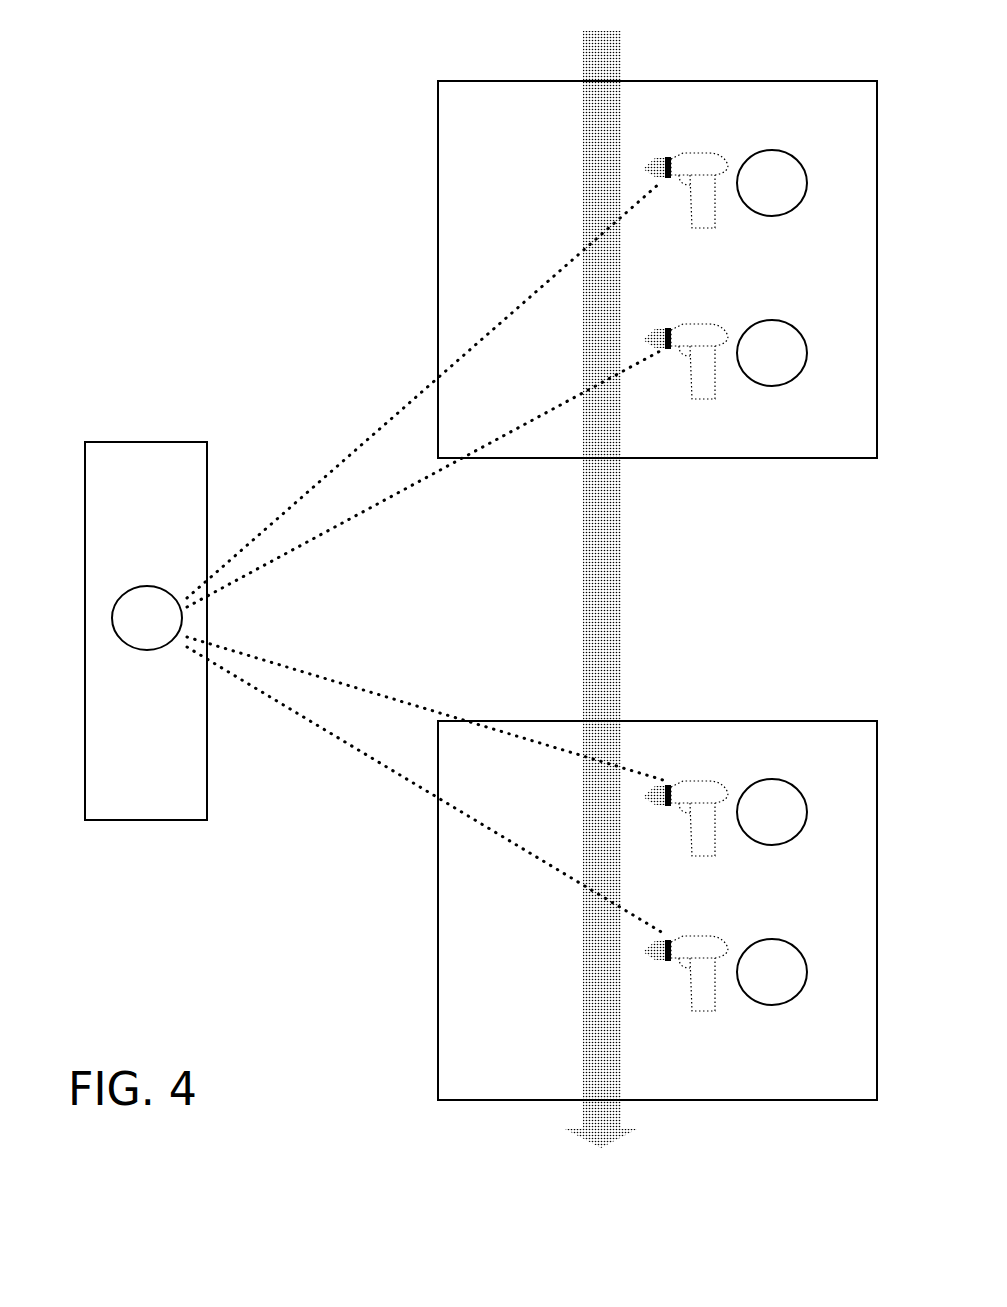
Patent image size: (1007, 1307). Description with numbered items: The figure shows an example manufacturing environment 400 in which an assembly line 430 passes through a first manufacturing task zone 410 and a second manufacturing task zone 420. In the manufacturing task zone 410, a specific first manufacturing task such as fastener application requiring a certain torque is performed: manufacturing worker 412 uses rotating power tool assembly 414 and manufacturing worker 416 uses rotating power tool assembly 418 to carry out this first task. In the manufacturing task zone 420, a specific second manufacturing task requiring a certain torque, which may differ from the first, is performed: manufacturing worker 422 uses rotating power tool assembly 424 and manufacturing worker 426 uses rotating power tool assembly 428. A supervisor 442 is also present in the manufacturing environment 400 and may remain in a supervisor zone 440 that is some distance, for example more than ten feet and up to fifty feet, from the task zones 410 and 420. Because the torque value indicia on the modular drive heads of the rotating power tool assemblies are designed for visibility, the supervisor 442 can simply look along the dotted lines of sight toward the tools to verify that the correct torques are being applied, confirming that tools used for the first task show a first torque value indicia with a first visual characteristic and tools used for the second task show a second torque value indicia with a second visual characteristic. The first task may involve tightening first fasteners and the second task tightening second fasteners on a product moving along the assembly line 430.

The manufacturing environment 400 is at (151, 144).
The manufacturing task zone 410 is at (627, 240).
The manufacturing worker 412 is at (797, 172).
The rotating power tool assembly 414 is at (703, 173).
The manufacturing worker 416 is at (797, 342).
The rotating power tool assembly 418 is at (703, 345).
The manufacturing task zone 420 is at (641, 940).
The manufacturing worker 422 is at (797, 800).
The rotating power tool assembly 424 is at (703, 802).
The manufacturing worker 426 is at (797, 958).
The rotating power tool assembly 428 is at (703, 957).
The assembly line 430 is at (644, 589).
The supervisor zone 440 is at (117, 601).
The supervisor 442 is at (101, 599).